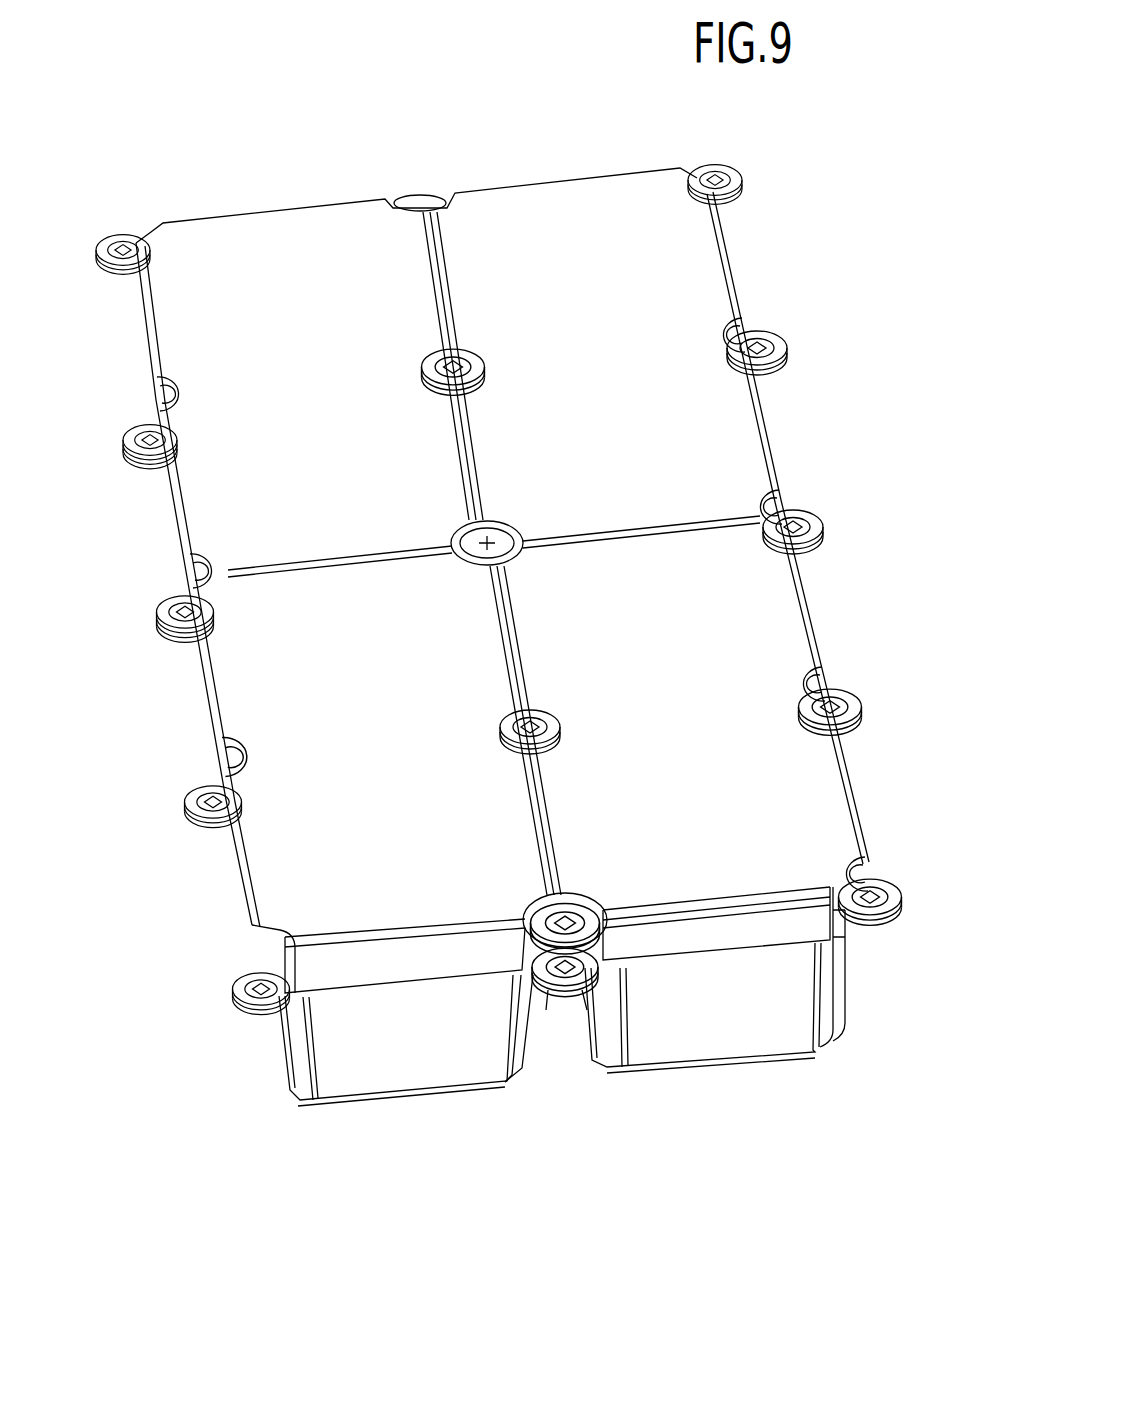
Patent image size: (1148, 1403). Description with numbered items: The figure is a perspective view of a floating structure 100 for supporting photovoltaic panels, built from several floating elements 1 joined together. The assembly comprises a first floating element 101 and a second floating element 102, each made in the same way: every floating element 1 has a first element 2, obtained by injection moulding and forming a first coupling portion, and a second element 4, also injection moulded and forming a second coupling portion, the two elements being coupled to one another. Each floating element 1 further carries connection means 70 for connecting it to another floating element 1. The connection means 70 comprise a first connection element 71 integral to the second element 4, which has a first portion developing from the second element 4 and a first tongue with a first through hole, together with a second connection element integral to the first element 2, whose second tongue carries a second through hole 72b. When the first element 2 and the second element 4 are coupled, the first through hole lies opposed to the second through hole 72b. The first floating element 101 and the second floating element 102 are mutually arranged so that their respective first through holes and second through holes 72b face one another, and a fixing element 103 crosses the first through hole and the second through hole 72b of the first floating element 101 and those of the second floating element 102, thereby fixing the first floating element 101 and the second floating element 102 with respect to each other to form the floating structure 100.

The floating structure 100 is at (450, 139).
The floating element 1 is at (763, 270).
The first element 2 is at (322, 1118).
The second element 4 is at (270, 860).
The connection means 70 is at (234, 1029).
The first connection element 71 is at (530, 1010).
The second through hole 72b is at (567, 990).
The first floating element 101 is at (197, 699).
The second floating element 102 is at (822, 596).
The fixing element 103 is at (522, 537).